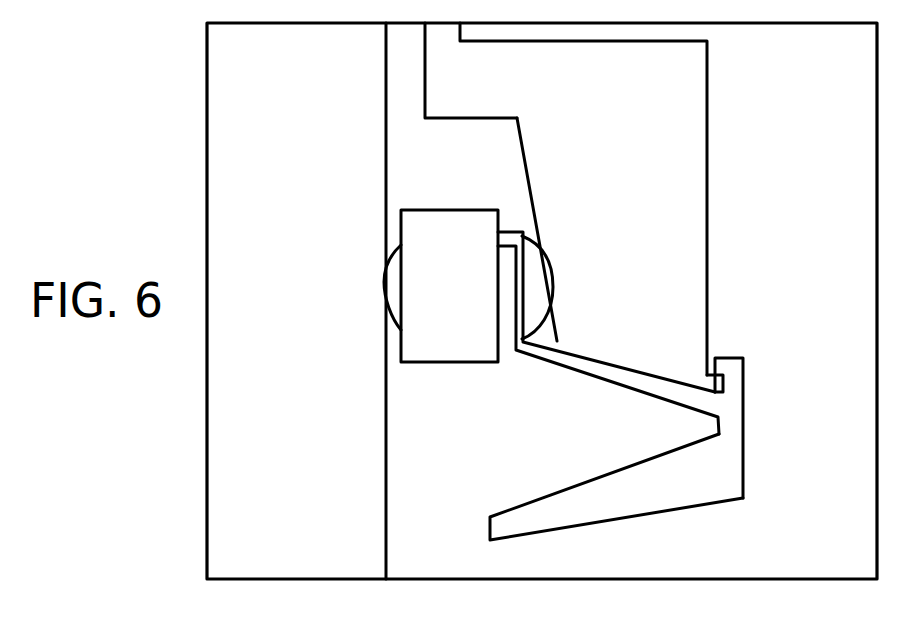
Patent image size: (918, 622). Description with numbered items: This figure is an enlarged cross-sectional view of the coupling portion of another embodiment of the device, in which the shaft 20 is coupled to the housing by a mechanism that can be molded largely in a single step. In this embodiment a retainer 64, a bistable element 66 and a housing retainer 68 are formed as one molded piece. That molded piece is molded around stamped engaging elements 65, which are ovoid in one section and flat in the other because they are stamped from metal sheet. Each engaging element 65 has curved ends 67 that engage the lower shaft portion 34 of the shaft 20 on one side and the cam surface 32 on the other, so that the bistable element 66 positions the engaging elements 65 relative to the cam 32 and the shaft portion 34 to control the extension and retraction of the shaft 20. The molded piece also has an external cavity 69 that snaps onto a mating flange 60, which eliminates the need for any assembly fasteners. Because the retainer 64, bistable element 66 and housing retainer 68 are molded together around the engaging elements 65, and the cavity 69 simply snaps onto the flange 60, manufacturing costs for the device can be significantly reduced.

The shaft 20 is at (313, 337).
The cam surface 32 is at (525, 168).
The lower portion of shaft 34 is at (386, 177).
The mating flange 60 is at (709, 374).
The retainer 64 is at (462, 363).
The engaging elements 65 is at (533, 297).
The bistable element 66 is at (590, 375).
The curved ends 67 is at (539, 234).
The housing retainer 68 is at (572, 489).
The external cavity 69 is at (725, 388).